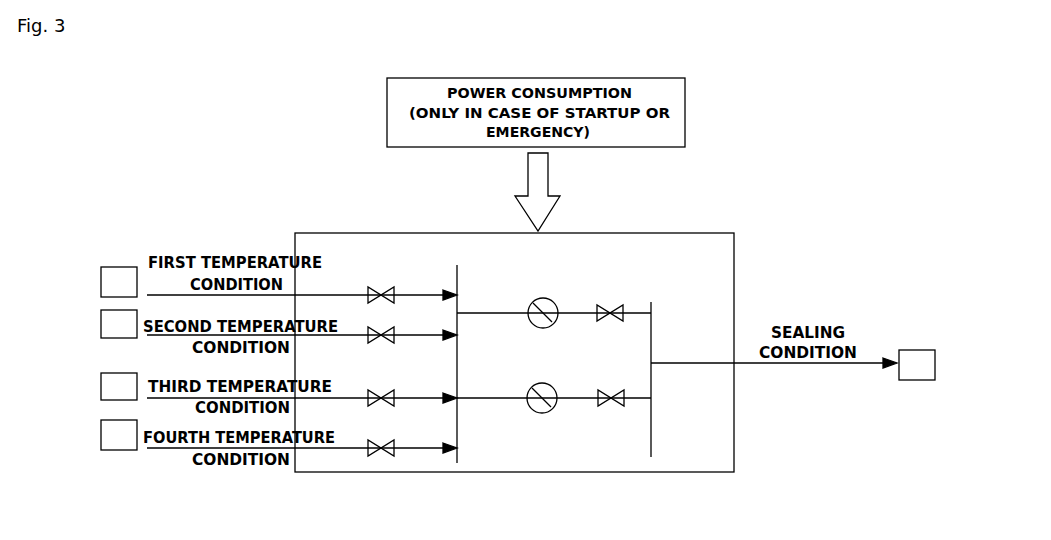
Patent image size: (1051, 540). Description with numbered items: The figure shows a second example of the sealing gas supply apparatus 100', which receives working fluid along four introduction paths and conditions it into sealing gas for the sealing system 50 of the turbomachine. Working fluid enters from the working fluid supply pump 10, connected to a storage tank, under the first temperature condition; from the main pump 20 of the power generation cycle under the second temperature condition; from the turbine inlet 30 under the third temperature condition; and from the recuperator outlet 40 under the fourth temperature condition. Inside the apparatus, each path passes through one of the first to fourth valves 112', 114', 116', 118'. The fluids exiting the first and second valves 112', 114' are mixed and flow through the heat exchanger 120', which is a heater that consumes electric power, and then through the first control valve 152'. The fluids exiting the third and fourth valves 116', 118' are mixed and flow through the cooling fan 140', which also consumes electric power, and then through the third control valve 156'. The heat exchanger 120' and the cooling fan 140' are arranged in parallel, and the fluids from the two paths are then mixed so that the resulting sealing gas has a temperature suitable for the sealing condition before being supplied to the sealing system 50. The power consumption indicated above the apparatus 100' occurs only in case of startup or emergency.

The working fluid supply pump 10 is at (119, 282).
The main pump 20 is at (119, 324).
The turbine inlet 30 is at (119, 386).
The recuperator outlet 40 is at (119, 435).
The sealing system 50 is at (917, 365).
The sealing gas supply apparatus 100' is at (514, 352).
The first valve 112' is at (385, 283).
The second valve 114' is at (385, 326).
The third valve 116' is at (385, 387).
The fourth valve 118' is at (385, 437).
The heat exchanger 120' is at (544, 303).
The cooling fan 140' is at (543, 388).
The first control valve 152' is at (614, 300).
The third control valve 156' is at (613, 385).